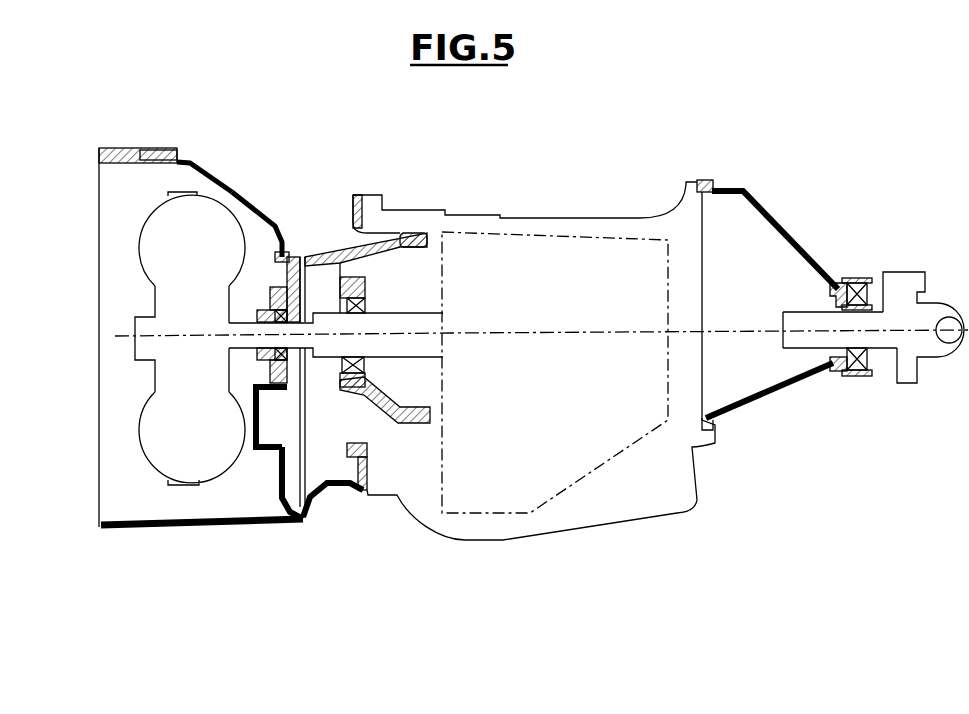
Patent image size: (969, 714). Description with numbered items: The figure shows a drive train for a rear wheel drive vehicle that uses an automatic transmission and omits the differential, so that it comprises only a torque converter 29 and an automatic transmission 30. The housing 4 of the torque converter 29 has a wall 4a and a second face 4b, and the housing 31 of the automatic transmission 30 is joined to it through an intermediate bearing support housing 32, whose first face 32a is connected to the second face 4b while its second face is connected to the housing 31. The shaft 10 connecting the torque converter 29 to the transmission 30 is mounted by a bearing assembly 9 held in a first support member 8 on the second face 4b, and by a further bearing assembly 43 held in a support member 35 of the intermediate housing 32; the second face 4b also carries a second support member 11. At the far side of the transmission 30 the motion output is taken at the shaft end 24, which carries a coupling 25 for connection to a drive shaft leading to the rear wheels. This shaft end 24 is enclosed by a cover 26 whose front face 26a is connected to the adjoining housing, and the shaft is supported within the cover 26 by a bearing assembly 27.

The housing 4 is at (214, 183).
The crankcase wall 4a is at (99, 157).
The second face of housing 4b is at (292, 300).
The first support member 8 is at (283, 305).
The bearing assembly 9 is at (318, 257).
The output shaft 10 is at (424, 337).
The second support member 11 is at (270, 453).
The shaft end 24 is at (805, 318).
The coupling 25 is at (928, 312).
The cover 26 is at (786, 228).
The front face of cover 26a is at (697, 180).
The bearing assembly 27 is at (856, 282).
The torque converter 29 is at (242, 216).
The automatic transmission 30 is at (583, 275).
The housing of automatic transmission 31 is at (536, 218).
The intermediate bearing support housing 32 is at (337, 489).
The first face of intermediate housing 32a is at (287, 513).
The support member 35 is at (362, 283).
The bearing assembly 43 is at (365, 304).